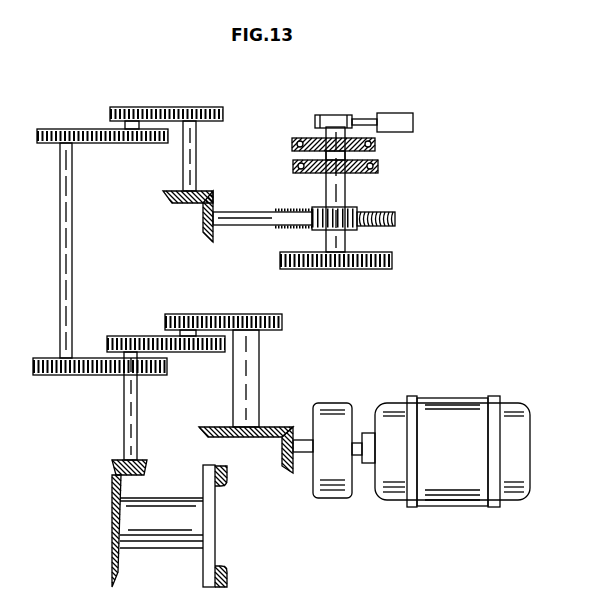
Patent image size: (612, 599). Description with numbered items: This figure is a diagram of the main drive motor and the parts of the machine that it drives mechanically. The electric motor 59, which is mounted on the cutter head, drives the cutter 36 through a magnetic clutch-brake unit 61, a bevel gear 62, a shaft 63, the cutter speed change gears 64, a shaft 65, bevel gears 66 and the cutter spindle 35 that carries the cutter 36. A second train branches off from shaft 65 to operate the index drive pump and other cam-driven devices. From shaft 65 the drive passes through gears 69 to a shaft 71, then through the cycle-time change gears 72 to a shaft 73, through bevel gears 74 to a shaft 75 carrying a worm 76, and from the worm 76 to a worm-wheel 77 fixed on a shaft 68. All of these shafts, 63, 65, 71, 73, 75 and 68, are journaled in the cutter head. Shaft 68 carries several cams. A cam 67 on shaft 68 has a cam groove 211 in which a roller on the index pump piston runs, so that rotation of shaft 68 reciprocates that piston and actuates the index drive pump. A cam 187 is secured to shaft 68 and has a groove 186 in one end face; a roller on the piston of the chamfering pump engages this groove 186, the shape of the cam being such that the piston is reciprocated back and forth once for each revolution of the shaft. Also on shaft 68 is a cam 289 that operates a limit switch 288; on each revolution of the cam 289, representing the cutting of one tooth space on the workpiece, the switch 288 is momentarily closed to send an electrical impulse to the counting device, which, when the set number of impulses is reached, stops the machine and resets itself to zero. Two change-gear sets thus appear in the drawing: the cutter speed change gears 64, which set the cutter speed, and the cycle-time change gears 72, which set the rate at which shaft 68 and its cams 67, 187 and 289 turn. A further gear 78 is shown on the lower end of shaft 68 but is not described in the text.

The cutter spindle 35 is at (146, 528).
The cutter 36 is at (223, 578).
The electric motor 59 is at (460, 400).
The magnetic clutch-brake unit 61 is at (332, 475).
The bevel gear 62 is at (267, 437).
The shaft 63 is at (247, 358).
The cutter speed change gears 64 is at (130, 336).
The shaft 65 is at (138, 405).
The bevel gears 66 is at (118, 492).
The cam 67 is at (319, 171).
The shaft 68 is at (338, 194).
The gears 69 is at (120, 375).
The shaft 71 is at (71, 250).
The cycle-time change gears 72 is at (177, 107).
The shaft 73 is at (183, 167).
The bevel gears 74 is at (196, 200).
The shaft 75 is at (247, 220).
The worm 76 is at (348, 229).
The worm-wheel 77 is at (393, 218).
The gear 78 is at (333, 260).
The groove 186 is at (302, 143).
The cam 187 is at (292, 142).
The cam groove 211 is at (302, 162).
The limit switch 288 is at (397, 120).
The cam 289 is at (336, 120).